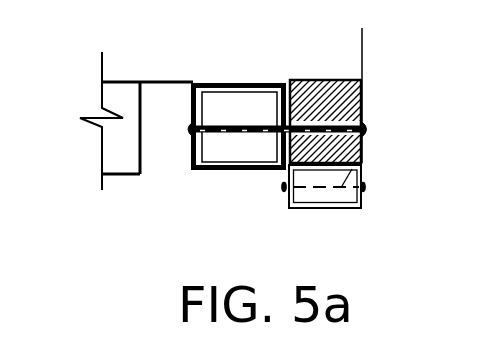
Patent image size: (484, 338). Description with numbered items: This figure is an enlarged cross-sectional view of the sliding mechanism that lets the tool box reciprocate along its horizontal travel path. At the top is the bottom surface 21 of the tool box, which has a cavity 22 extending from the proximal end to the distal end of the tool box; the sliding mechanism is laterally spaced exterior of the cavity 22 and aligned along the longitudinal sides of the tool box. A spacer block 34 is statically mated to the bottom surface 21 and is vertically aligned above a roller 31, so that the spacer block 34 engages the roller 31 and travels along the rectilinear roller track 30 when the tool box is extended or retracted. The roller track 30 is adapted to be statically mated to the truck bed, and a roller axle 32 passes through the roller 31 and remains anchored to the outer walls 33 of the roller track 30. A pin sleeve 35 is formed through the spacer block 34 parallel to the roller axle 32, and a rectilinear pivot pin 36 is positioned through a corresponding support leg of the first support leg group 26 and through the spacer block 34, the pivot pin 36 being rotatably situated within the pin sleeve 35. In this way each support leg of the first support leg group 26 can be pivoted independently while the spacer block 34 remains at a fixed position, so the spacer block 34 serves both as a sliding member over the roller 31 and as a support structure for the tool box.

The bottom surface 21 is at (125, 80).
The cavity 22 is at (179, 126).
The first support leg group 26 is at (191, 170).
The pivot pin 36 is at (187, 133).
The spacer block 34 is at (338, 80).
The pin sleeve 35 is at (362, 98).
The roller axle 32 is at (362, 163).
The roller track 30 is at (376, 191).
The outer wall 33 is at (362, 208).
The roller 31 is at (333, 207).